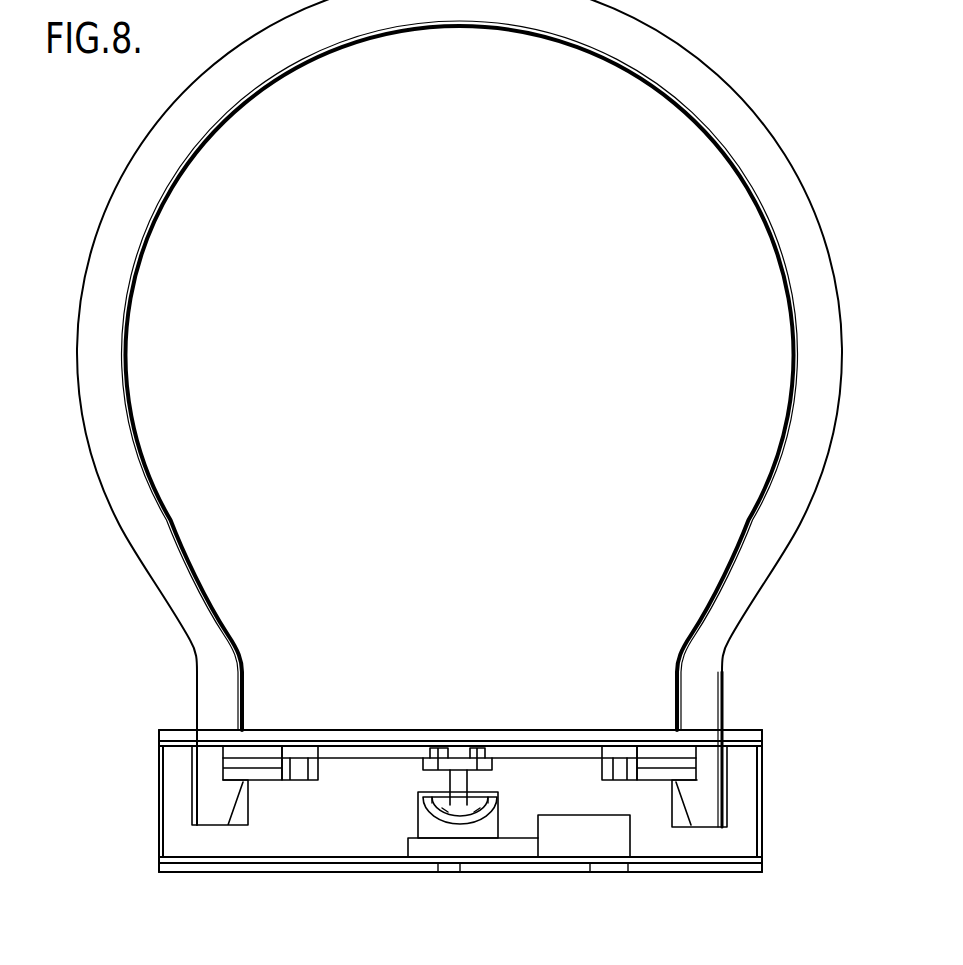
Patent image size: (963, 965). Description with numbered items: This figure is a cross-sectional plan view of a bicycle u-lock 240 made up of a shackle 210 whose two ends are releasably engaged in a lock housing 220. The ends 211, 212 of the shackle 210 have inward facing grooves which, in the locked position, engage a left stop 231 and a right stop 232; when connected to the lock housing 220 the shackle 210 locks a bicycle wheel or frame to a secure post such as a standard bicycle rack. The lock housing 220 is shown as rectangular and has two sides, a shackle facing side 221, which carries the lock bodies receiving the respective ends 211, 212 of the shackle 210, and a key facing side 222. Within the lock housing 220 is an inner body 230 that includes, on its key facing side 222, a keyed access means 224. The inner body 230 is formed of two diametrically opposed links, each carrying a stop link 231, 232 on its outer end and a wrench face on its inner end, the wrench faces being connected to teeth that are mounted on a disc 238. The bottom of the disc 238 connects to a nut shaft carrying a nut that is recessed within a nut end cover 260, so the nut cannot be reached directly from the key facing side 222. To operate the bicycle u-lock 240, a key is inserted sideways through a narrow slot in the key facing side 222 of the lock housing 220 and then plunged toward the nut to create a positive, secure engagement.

The bicycle u-lock 240 is at (806, 118).
The shackle 210 is at (115, 220).
The end of shackle 211 is at (202, 707).
The end of shackle 212 is at (727, 702).
The lock housing 220 is at (805, 806).
The shackle facing side 221 is at (345, 730).
The key facing side 222 is at (333, 867).
The inner body 230 is at (400, 748).
The left stop 231 is at (232, 757).
The right stop 232 is at (683, 758).
The disc 238 is at (466, 765).
The nut end cover 260 is at (498, 868).
The keyed access means 224 is at (564, 846).